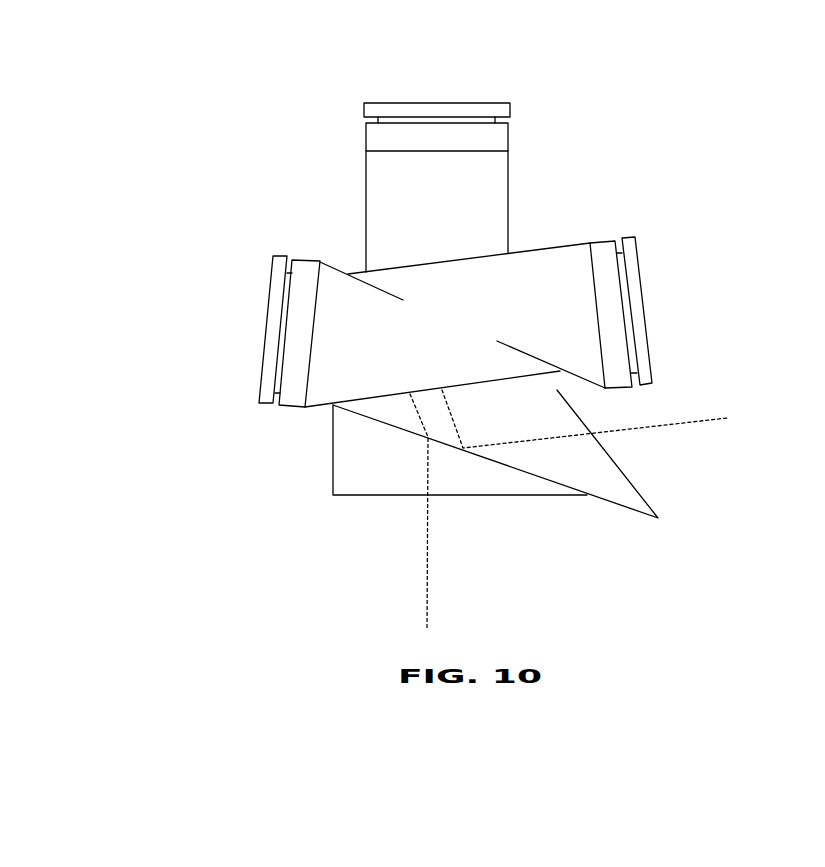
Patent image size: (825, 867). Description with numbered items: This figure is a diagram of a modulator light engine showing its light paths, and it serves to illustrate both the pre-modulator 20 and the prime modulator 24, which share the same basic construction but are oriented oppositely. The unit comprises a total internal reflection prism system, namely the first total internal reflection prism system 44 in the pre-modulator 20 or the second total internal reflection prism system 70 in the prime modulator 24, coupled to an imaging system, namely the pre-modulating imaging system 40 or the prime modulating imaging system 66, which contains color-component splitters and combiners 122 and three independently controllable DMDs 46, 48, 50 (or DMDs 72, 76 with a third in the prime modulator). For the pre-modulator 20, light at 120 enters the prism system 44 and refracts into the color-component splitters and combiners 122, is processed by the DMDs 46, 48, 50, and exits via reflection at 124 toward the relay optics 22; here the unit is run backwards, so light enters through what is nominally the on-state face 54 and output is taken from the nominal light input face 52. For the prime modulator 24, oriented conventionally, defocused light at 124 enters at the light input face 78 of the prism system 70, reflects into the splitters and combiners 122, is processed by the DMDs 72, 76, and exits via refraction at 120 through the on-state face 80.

The relay optics 22 is at (822, 70).
The pre-modulator 20 is at (233, 151).
The prime modulator 24 is at (293, 189).
The DMD 46 is at (481, 167).
The DMD 72 is at (508, 130).
The pre-modulating imaging system 40 is at (402, 260).
The prime modulating imaging system 66 is at (402, 260).
The color-component splitters and combiners 122 is at (568, 175).
The DMD 48 is at (236, 362).
The DMD 76 is at (293, 408).
The DMD 50 is at (656, 282).
The light input face 78 is at (602, 240).
The on-state face 54 is at (409, 488).
The on-state face 80 is at (362, 497).
The first total internal reflection prism system 44 is at (576, 500).
The second total internal reflection prism system 70 is at (576, 500).
The light input face 52 is at (570, 510).
The light entry/refraction location 120 is at (407, 512).
The light reflection location 124 is at (584, 419).